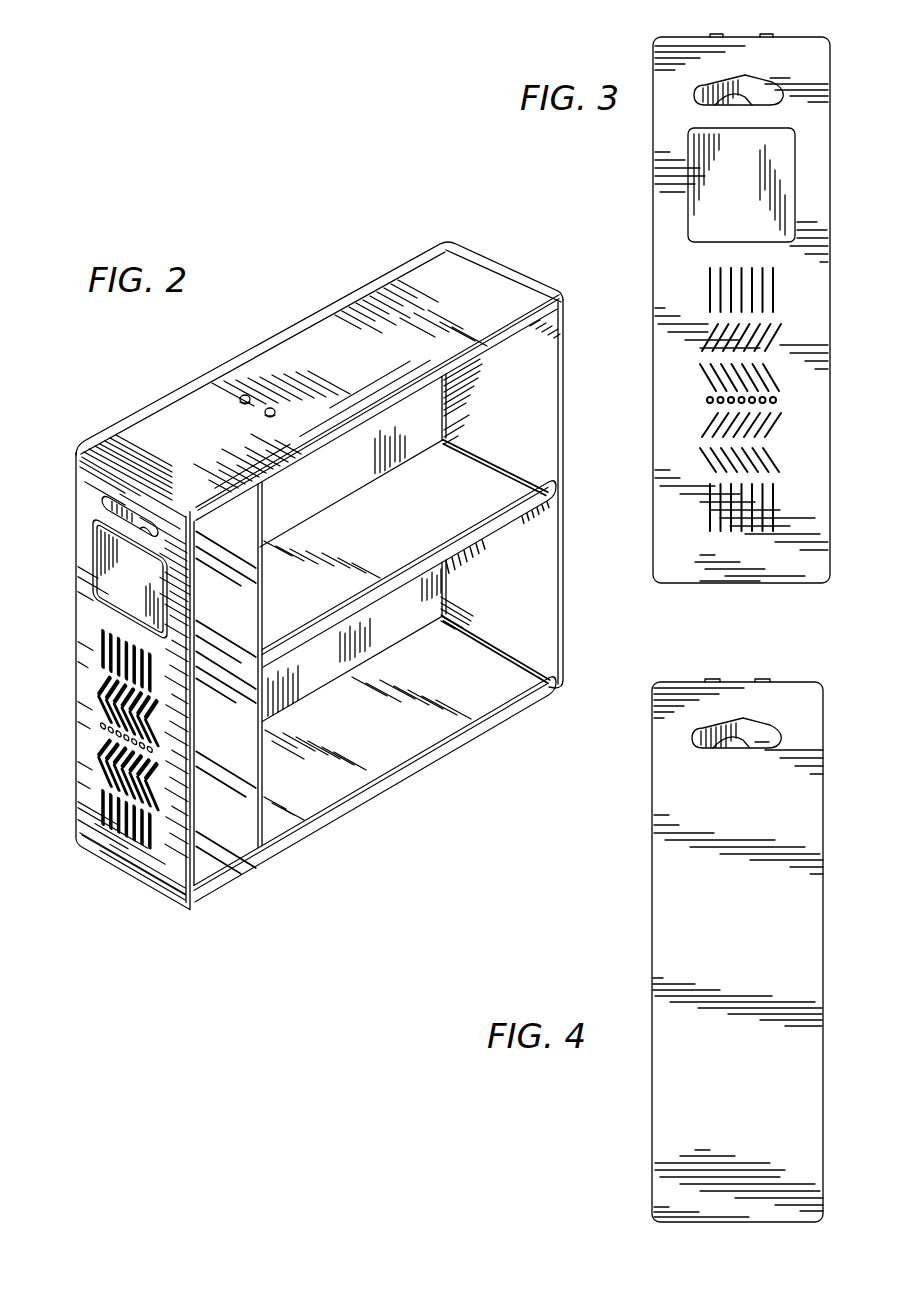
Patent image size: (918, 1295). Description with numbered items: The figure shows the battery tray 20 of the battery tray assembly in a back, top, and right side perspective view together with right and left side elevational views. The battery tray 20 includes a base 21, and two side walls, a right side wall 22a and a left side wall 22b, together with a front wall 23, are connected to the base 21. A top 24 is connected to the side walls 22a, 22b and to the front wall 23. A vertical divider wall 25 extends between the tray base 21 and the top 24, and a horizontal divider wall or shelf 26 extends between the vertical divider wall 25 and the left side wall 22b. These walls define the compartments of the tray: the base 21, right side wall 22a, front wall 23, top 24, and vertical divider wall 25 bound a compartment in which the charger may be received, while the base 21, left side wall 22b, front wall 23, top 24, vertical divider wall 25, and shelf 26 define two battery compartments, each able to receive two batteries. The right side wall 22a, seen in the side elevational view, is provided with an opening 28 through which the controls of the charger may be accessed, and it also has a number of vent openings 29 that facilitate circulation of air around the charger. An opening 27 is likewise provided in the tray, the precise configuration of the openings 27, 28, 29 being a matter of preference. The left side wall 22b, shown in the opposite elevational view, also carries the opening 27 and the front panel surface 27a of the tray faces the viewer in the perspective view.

In FIG. 2, the battery tray 20 is at (315, 612).
In FIG. 3, the battery tray 20 is at (676, 305).
In FIG. 4, the battery tray 20 is at (667, 957).
In FIG. 2, the base 21 is at (386, 737).
In FIG. 3, the right side wall 22a is at (662, 338).
In FIG. 2, the left side wall 22b is at (545, 395).
In FIG. 4, the left side wall 22b is at (663, 815).
In FIG. 2, the front wall 23 is at (339, 479).
In FIG. 2, the top 24 is at (322, 335).
In FIG. 2, the vertical divider wall 25 is at (235, 631).
In FIG. 2, the shelf 26 is at (397, 537).
In FIG. 2, the opening 27 is at (105, 512).
In FIG. 3, the opening 27 is at (747, 95).
In FIG. 4, the opening 27 is at (740, 738).
In FIG. 2, the front panel 27a is at (101, 662).
In FIG. 2, the opening 28 is at (92, 598).
In FIG. 3, the opening 28 is at (702, 201).
In FIG. 2, the vent openings 29 is at (100, 797).
In FIG. 3, the vent openings 29 is at (702, 457).